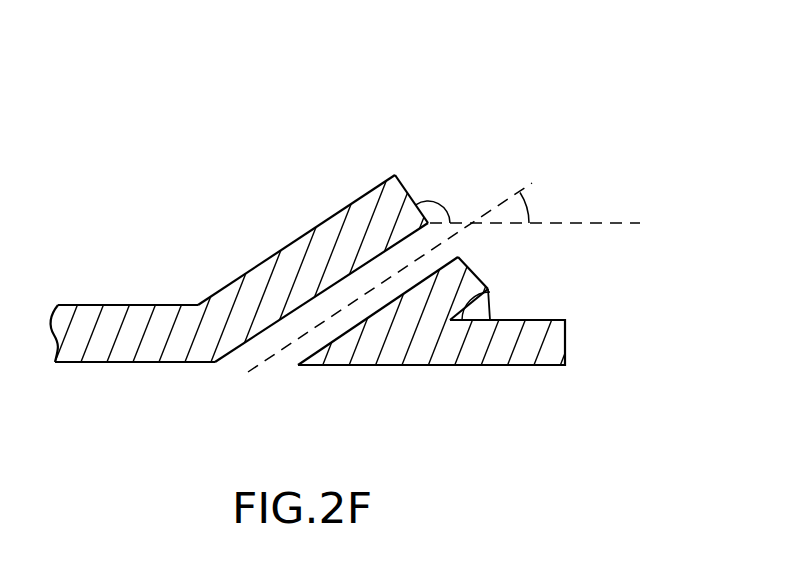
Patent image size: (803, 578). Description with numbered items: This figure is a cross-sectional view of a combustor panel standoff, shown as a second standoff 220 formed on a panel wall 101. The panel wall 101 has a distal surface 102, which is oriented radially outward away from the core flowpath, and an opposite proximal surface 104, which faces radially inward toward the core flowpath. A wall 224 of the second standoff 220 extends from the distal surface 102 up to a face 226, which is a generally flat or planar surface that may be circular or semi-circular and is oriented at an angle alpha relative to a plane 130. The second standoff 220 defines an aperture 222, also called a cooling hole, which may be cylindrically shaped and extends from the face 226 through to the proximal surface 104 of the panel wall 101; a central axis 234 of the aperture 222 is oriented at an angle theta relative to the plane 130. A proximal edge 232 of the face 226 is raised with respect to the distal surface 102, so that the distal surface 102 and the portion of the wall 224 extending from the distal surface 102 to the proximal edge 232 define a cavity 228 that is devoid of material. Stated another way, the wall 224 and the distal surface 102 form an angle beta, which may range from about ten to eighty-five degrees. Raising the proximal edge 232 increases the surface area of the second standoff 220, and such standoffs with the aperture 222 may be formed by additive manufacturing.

The second standoff 220 is at (167, 129).
The panel wall 101 is at (68, 343).
The distal surface 102 is at (113, 306).
The wall 224 is at (291, 265).
The face 226 is at (401, 182).
The aperture 222 is at (223, 385).
The central axis 234 is at (275, 357).
The plane 130 is at (568, 223).
The proximal surface 104 is at (515, 367).
The cavity 228 is at (536, 303).
The proximal edge 232 is at (492, 294).